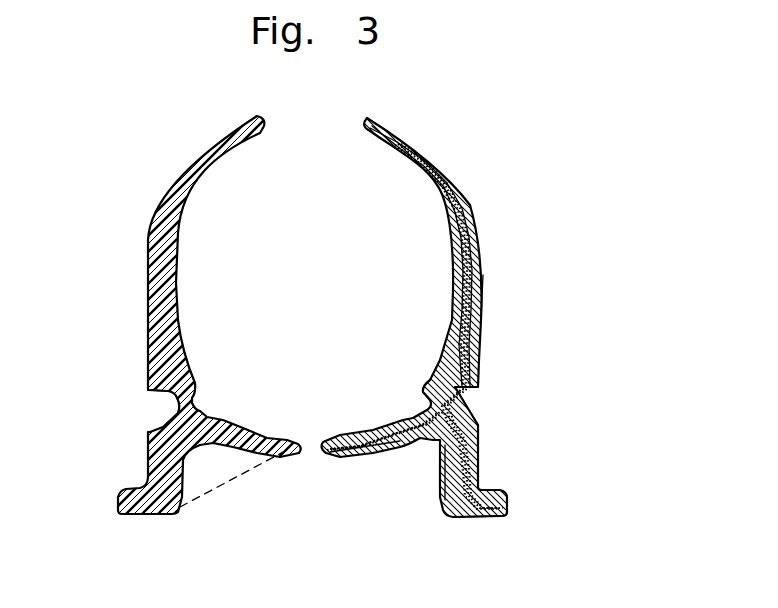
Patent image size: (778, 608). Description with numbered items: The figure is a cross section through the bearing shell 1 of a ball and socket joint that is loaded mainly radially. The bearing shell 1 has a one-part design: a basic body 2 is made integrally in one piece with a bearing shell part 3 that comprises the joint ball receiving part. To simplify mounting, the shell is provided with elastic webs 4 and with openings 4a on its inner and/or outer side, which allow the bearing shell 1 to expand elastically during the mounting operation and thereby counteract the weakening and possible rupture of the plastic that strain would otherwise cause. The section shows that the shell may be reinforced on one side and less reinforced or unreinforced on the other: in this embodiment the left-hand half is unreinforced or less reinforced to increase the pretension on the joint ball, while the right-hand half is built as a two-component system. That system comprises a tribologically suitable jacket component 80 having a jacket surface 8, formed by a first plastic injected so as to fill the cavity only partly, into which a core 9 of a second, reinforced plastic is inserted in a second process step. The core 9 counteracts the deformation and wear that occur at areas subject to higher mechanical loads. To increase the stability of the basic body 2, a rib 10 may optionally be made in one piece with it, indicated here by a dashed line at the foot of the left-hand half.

The bearing shell 1 is at (448, 148).
The basic body 2 is at (502, 515).
The bearing shell part 3 is at (154, 216).
The elastic web 4 is at (168, 425).
The opening 4a is at (154, 413).
The jacket surface 8 is at (478, 262).
The core 9 is at (474, 202).
The rib 10 is at (217, 492).
The jacket component 80 is at (500, 307).